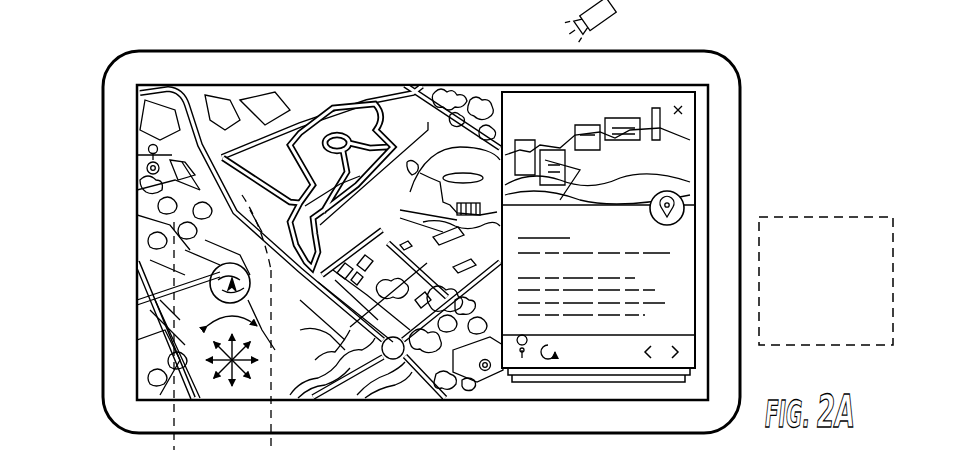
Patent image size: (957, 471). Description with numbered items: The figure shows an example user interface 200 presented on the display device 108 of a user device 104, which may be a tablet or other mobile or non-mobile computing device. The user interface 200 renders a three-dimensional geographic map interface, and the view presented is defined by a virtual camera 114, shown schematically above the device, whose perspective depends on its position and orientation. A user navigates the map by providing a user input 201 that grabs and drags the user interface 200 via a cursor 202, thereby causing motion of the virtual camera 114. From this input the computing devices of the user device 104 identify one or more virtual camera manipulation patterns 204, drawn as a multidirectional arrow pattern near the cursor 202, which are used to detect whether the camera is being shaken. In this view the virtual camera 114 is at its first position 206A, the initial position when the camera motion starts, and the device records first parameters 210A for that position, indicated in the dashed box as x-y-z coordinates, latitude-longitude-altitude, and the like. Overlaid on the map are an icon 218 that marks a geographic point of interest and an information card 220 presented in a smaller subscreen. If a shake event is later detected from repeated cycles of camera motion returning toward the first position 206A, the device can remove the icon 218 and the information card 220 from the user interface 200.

The user device 104 is at (708, 50).
The display device 108 is at (697, 125).
The virtual camera 114 is at (606, 24).
The user interface 200 is at (167, 107).
The user input 201 is at (213, 272).
The cursor 202 is at (210, 285).
The virtual camera manipulation pattern 204 is at (196, 362).
The first position 206A is at (198, 297).
The first parameters 210A is at (810, 217).
The icon 218 is at (150, 152).
The information card 220 is at (683, 196).